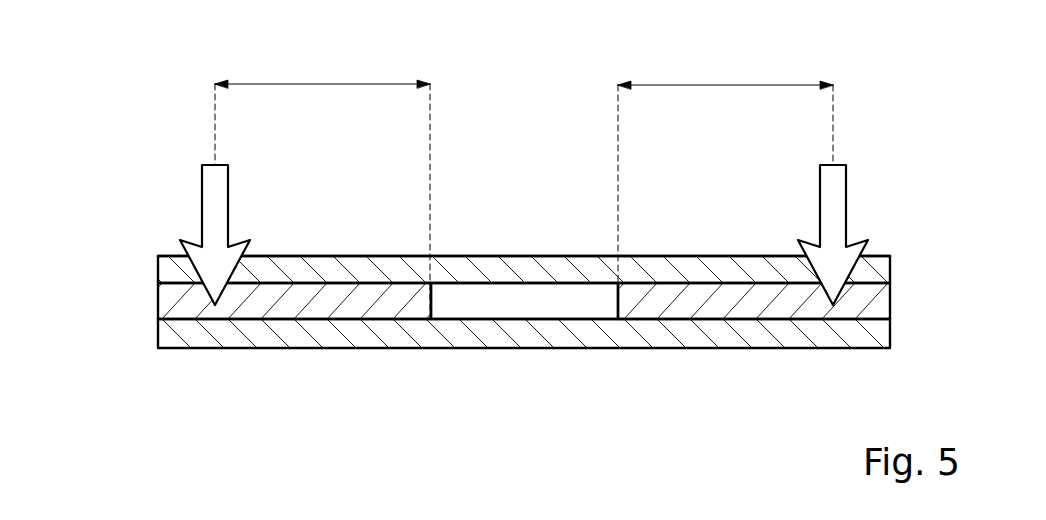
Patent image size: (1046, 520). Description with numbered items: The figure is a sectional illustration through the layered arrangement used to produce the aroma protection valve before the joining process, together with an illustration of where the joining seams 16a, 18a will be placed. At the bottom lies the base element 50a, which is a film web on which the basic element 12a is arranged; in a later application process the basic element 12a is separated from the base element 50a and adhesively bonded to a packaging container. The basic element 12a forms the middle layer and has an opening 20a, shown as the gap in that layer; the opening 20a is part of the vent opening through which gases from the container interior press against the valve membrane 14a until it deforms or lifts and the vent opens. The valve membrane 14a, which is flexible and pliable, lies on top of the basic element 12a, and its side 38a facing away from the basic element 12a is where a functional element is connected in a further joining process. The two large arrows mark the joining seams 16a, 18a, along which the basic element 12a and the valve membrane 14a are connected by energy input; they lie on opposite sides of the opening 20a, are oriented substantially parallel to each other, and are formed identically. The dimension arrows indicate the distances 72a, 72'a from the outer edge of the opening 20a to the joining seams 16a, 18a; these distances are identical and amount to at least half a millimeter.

The basic element 12a is at (193, 303).
The valve membrane 14a is at (187, 270).
The joining seam 16a is at (215, 200).
The joining seam 18a is at (833, 205).
The opening 20a is at (537, 305).
The side of the valve membrane 38a is at (385, 257).
The base element 50a is at (508, 337).
The distance 72a is at (320, 84).
The distance 72'a is at (725, 159).